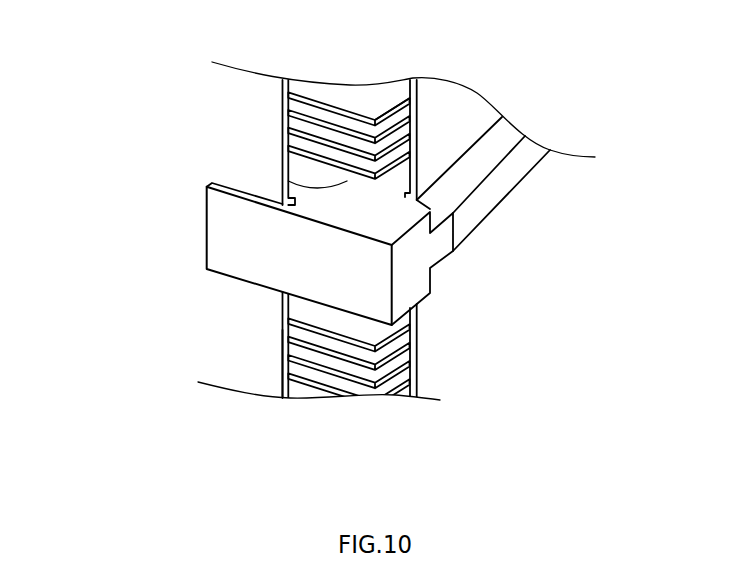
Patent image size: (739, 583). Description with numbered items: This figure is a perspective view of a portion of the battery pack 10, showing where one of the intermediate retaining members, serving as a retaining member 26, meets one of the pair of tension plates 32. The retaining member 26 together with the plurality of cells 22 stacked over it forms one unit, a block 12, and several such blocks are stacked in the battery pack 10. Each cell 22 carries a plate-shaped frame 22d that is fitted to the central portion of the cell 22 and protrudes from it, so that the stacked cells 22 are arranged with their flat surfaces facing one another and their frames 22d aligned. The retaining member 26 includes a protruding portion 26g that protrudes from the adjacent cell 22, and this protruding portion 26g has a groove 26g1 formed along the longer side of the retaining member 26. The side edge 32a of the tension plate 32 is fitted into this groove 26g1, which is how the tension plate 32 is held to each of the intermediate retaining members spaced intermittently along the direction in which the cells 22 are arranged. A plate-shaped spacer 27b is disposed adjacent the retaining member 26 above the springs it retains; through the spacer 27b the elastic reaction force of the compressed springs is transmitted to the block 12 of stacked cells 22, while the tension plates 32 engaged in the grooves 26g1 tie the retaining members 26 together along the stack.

The battery pack 10 is at (128, 258).
The block 12 is at (411, 124).
The cell 22 is at (330, 92).
The frame 22d is at (397, 112).
The retaining member 26 is at (495, 210).
The protruding portion 26g is at (255, 258).
The groove 26g1 is at (237, 185).
The spacer 27b is at (320, 182).
The tension plate 32 is at (226, 360).
The side edge 32a is at (273, 382).